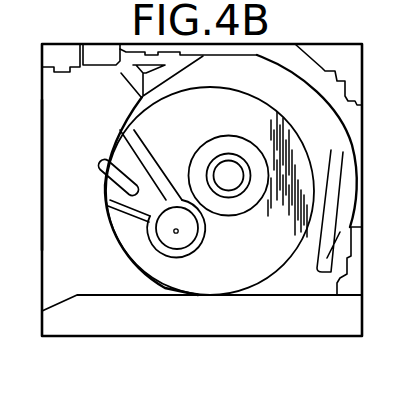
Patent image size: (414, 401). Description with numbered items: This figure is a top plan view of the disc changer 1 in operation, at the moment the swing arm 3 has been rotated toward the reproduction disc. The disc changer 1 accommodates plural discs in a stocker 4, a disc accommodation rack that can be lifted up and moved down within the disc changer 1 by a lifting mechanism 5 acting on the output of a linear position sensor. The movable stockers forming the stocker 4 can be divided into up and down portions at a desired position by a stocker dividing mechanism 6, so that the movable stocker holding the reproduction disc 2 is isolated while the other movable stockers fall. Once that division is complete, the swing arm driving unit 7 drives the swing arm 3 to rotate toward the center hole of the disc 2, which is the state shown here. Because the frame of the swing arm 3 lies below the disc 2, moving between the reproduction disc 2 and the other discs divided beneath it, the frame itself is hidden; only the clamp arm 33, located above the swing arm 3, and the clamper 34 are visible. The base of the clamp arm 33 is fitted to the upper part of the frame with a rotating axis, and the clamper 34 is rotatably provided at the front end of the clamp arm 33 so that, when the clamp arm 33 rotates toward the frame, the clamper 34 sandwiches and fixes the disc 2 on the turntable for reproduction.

The disc changer 1 is at (96, 343).
The disc 2 is at (302, 212).
The swing arm 3 is at (161, 179).
The stocker 4 is at (330, 145).
The lifting mechanism 5 is at (346, 67).
The stocker dividing mechanism 6 is at (152, 72).
The drive unit 7 is at (64, 162).
The clamp arm 33 is at (125, 178).
The clamper 34 is at (204, 249).